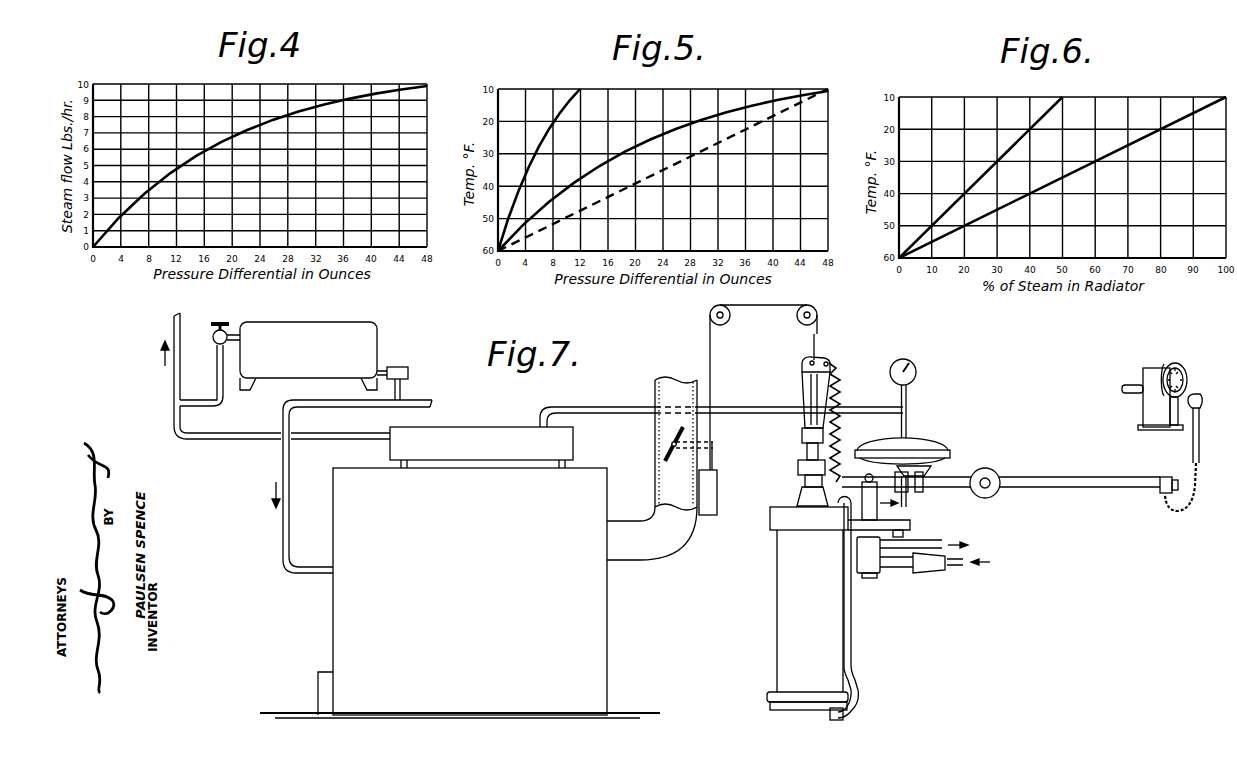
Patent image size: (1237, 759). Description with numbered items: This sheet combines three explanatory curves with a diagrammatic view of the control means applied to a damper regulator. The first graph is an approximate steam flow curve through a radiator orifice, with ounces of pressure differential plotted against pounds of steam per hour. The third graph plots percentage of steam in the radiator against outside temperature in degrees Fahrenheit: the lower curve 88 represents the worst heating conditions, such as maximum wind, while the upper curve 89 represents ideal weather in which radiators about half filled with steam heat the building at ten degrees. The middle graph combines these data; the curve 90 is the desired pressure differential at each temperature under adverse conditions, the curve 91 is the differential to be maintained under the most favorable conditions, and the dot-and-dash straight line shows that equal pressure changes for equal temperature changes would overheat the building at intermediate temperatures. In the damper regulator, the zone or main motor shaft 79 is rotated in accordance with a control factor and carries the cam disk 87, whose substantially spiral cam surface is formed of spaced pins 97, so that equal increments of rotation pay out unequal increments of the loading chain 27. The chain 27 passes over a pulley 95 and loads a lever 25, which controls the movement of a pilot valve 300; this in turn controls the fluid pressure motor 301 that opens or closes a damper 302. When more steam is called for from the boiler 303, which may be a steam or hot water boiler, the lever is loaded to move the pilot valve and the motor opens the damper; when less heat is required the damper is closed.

In FIG. 5, the curve 90 is at (634, 152).
In FIG. 5, the curve 91 is at (551, 136).
In FIG. 6, the lower curve 88 is at (1043, 168).
In FIG. 6, the upper curve 89 is at (993, 167).
In FIG. 7, the boiler 303 is at (462, 591).
In FIG. 7, the damper 302 is at (663, 454).
In FIG. 7, the fluid pressure motor 301 is at (790, 572).
In FIG. 7, the pilot valve 300 is at (871, 560).
In FIG. 7, the lever 25 is at (1085, 466).
In FIG. 7, the loading chain 27 is at (1172, 513).
In FIG. 7, the motor shaft 79 is at (1130, 386).
In FIG. 7, the cam disk 87 is at (1181, 362).
In FIG. 7, the pins 97 is at (1167, 368).
In FIG. 7, the pulley 95 is at (1197, 396).